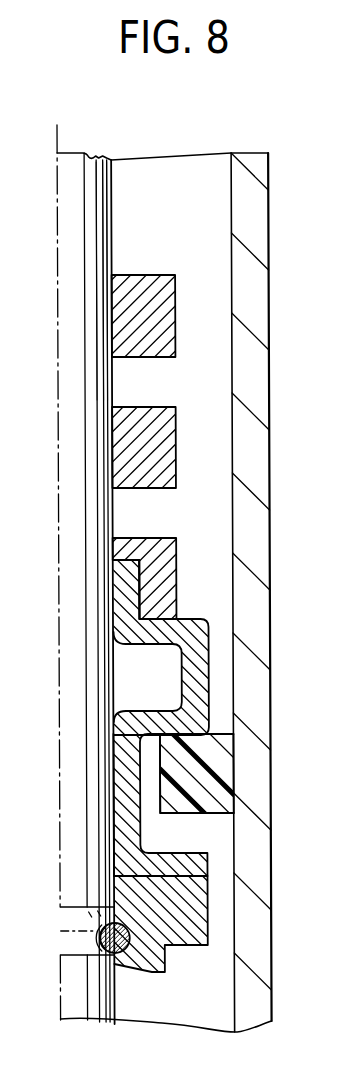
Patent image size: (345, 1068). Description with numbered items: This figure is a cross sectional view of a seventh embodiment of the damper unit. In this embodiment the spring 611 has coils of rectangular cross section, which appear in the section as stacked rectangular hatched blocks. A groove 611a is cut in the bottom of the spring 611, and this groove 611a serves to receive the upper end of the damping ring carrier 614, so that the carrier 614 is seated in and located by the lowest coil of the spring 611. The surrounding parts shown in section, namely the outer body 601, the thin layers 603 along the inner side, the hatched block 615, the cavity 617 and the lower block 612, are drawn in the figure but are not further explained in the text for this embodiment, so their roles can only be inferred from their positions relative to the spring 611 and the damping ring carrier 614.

The housing 601 is at (260, 190).
The thin film layers 603 is at (100, 165).
The spring 611 is at (165, 318).
The groove 611a is at (137, 585).
The damping ring carrier 614 is at (192, 630).
The magnet block 615 is at (204, 778).
The cavity 617 is at (177, 831).
The lower support block 612 is at (183, 907).